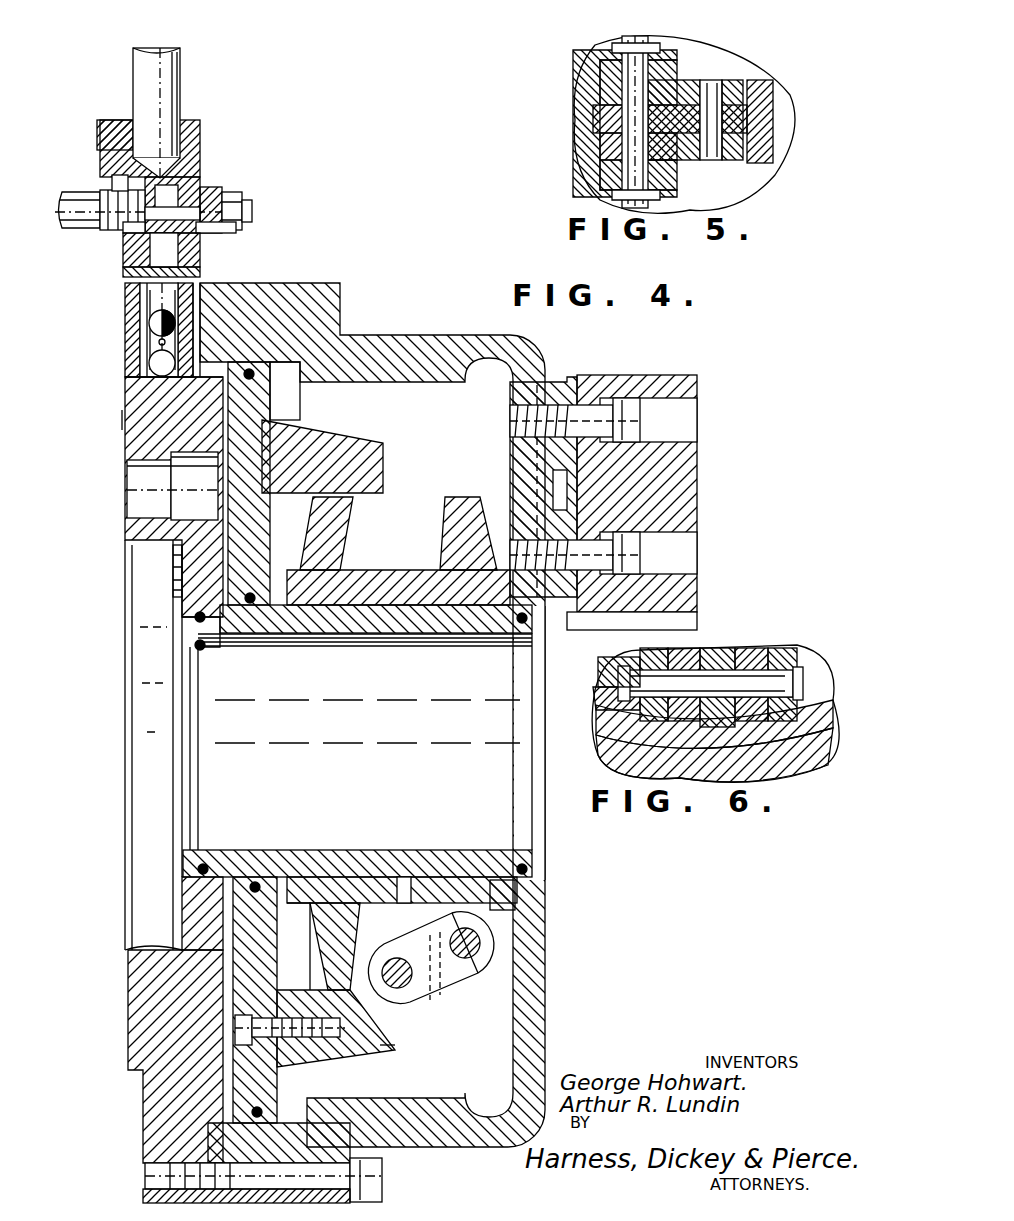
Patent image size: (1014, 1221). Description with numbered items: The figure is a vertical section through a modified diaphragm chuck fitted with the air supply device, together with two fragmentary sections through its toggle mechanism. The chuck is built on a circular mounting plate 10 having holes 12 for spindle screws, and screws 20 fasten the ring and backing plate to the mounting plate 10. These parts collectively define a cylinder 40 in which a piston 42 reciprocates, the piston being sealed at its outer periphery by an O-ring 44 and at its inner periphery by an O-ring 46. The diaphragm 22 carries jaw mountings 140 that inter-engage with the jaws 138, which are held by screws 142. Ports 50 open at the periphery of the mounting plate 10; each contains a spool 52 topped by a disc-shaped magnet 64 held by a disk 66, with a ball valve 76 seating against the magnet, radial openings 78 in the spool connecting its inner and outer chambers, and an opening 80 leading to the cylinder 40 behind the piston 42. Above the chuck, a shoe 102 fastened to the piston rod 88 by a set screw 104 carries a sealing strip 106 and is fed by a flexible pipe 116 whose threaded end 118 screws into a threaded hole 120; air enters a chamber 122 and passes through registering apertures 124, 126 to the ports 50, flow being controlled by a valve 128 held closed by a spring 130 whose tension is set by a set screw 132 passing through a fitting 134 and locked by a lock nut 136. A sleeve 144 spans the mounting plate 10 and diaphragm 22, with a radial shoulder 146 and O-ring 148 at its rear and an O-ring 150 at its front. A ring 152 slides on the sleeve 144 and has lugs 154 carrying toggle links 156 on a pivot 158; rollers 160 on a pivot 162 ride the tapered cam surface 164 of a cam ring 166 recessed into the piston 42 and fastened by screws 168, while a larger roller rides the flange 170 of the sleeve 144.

In FIG. 4, the mounting plate 10 is at (125, 437).
In FIG. 4, the holes 12 is at (127, 489).
In FIG. 4, the screws 20 is at (382, 1180).
In FIG. 4, the diaphragm 22 is at (518, 346).
In FIG. 5, the diaphragm 22 is at (765, 120).
In FIG. 4, the cylinder 40 is at (176, 565).
In FIG. 4, the piston 42 is at (262, 548).
In FIG. 6, the piston 42 is at (612, 695).
In FIG. 4, the O-ring 44 is at (235, 362).
In FIG. 4, the O-ring 46 is at (300, 575).
In FIG. 4, the ports 50 is at (195, 284).
In FIG. 4, the spool 52 is at (130, 370).
In FIG. 4, the magnet 64 is at (148, 320).
In FIG. 4, the disk 66 is at (140, 300).
In FIG. 4, the valve 76 is at (126, 348).
In FIG. 4, the radial openings 78 is at (174, 318).
In FIG. 4, the opening 80 is at (177, 345).
In FIG. 4, the piston rod 88 is at (178, 85).
In FIG. 4, the shoe 102 is at (210, 128).
In FIG. 4, the set screw 104 is at (105, 125).
In FIG. 4, the sealing strip 106 is at (205, 245).
In FIG. 4, the flexible pipe 116 is at (72, 205).
In FIG. 4, the threaded end 118 is at (110, 226).
In FIG. 4, the threaded hole 120 is at (113, 180).
In FIG. 4, the chamber 122 is at (168, 190).
In FIG. 4, the aperture 124 is at (165, 243).
In FIG. 4, the aperture 126 is at (128, 278).
In FIG. 4, the valve 128 is at (135, 240).
In FIG. 4, the spring 130 is at (232, 222).
In FIG. 4, the set screw 132 is at (250, 205).
In FIG. 4, the fitting 134 is at (212, 190).
In FIG. 4, the lock nut 136 is at (232, 198).
In FIG. 4, the jaws 138 is at (700, 480).
In FIG. 4, the jaw mountings 140 is at (548, 382).
In FIG. 4, the screws 142 is at (628, 420).
In FIG. 4, the sleeve 144 is at (340, 645).
In FIG. 4, the radial shoulder 146 is at (183, 600).
In FIG. 4, the O-ring 148 is at (206, 655).
In FIG. 4, the O-ring 150 is at (520, 640).
In FIG. 4, the ring 152 is at (400, 880).
In FIG. 4, the lugs 154 is at (470, 992).
In FIG. 5, the lugs 154 is at (745, 95).
In FIG. 4, the toggle links 156 is at (445, 988).
In FIG. 5, the toggle links 156 is at (690, 85).
In FIG. 6, the toggle links 156 is at (690, 650).
In FIG. 4, the pivot 158 is at (478, 940).
In FIG. 5, the pivot 158 is at (712, 85).
In FIG. 5, the rollers 160 is at (600, 80).
In FIG. 6, the rollers 160 is at (655, 650).
In FIG. 4, the pivot 162 is at (395, 910).
In FIG. 5, the pivot 162 is at (622, 46).
In FIG. 6, the pivot 162 is at (798, 668).
In FIG. 4, the cam surface 164 is at (388, 1045).
In FIG. 6, the cam surface 164 is at (615, 720).
In FIG. 4, the cam ring 166 is at (355, 1050).
In FIG. 6, the cam ring 166 is at (630, 755).
In FIG. 4, the screws 168 is at (290, 1013).
In FIG. 4, the flange 170 is at (345, 955).
In FIG. 5, the flange 170 is at (585, 148).
In FIG. 6, the flange 170 is at (615, 668).